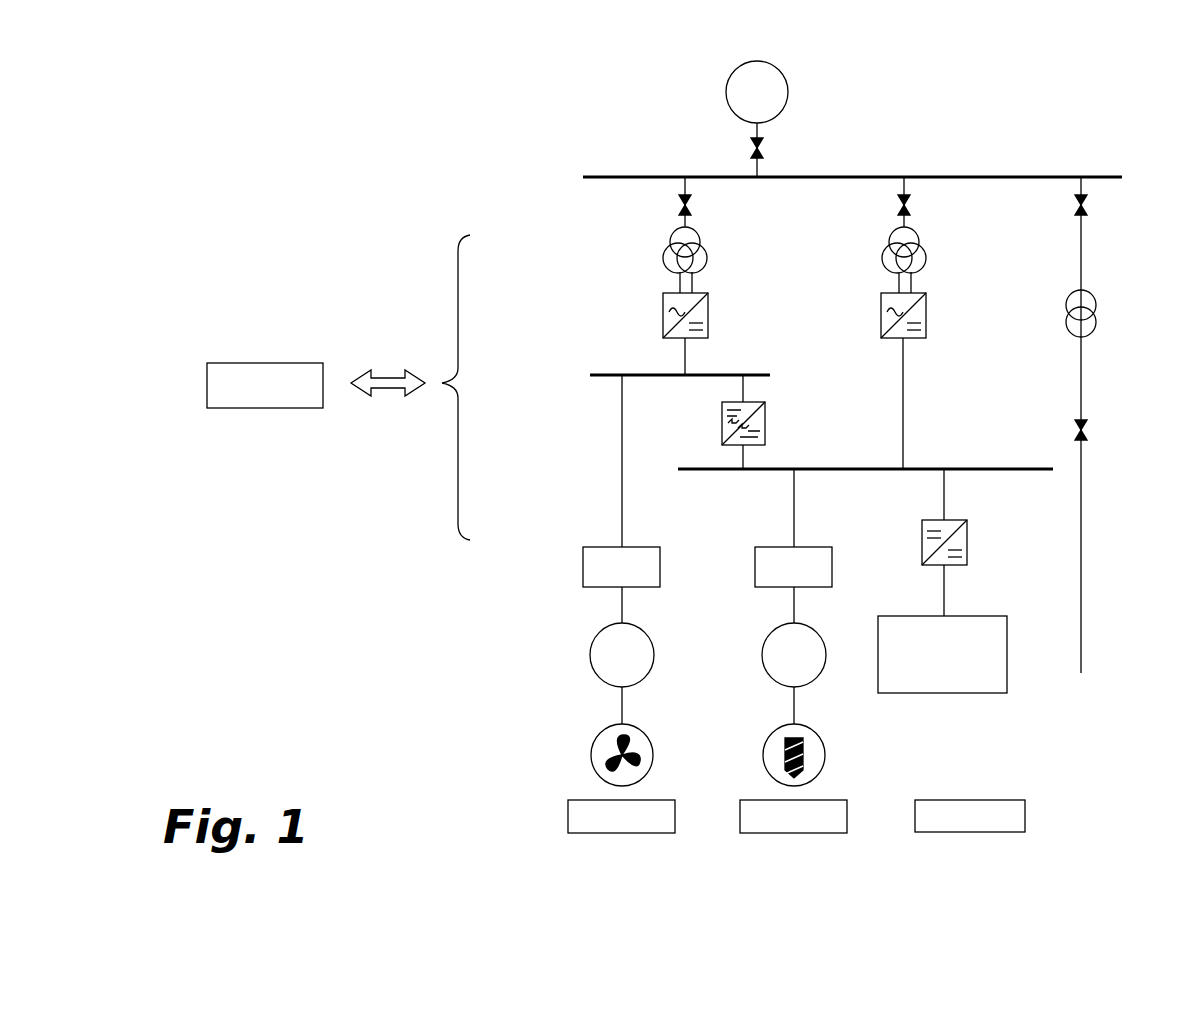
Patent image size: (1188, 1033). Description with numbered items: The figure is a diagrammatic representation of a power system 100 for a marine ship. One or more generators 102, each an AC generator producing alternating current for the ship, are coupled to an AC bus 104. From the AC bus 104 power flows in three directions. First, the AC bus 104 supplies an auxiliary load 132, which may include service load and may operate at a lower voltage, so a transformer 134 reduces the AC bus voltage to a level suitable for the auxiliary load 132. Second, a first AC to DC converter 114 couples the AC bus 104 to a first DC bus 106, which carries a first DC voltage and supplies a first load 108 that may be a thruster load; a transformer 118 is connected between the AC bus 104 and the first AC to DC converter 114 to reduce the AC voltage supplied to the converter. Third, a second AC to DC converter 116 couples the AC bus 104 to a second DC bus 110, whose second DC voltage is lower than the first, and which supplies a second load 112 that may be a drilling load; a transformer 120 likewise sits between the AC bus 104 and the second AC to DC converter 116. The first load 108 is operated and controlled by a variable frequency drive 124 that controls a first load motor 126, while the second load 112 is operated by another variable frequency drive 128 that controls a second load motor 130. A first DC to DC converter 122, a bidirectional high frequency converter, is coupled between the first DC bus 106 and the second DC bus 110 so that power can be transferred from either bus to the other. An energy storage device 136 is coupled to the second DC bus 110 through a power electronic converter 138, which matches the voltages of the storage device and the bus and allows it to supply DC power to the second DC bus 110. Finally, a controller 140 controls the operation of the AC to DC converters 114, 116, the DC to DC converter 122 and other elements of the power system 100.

The power system 100 is at (256, 90).
The generator 102 is at (738, 70).
The AC bus 104 is at (942, 177).
The first DC bus 106 is at (716, 374).
The first load 108 is at (570, 800).
The second DC bus 110 is at (992, 469).
The second load 112 is at (742, 800).
The first AC to DC converter 114 is at (663, 298).
The second AC to DC converter 116 is at (881, 298).
The transformer 118 is at (665, 252).
The transformer 120 is at (883, 252).
The first DC to DC converter 122 is at (722, 422).
The variable frequency drive 124 is at (583, 549).
The first load motor 126 is at (591, 641).
The variable frequency drive 128 is at (755, 549).
The second load motor 130 is at (763, 641).
The auxiliary load 132 is at (915, 800).
The transformer 134 is at (1066, 324).
The energy storage device 136 is at (1007, 646).
The power electronic converter 138 is at (922, 558).
The controller 140 is at (207, 387).